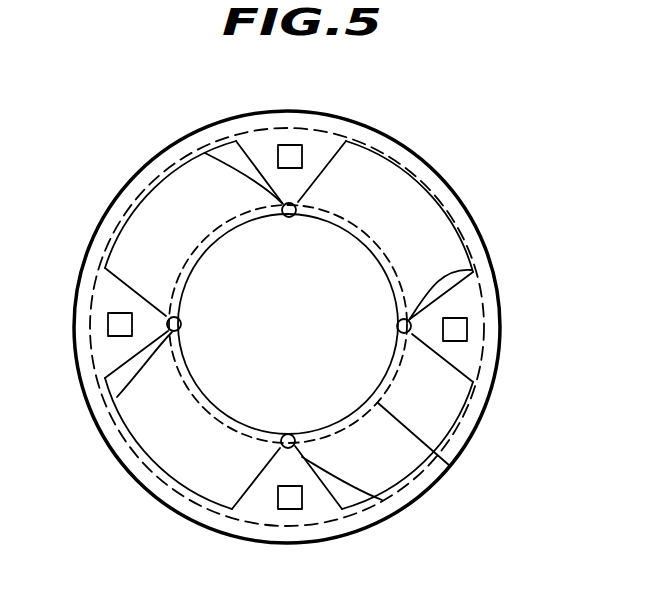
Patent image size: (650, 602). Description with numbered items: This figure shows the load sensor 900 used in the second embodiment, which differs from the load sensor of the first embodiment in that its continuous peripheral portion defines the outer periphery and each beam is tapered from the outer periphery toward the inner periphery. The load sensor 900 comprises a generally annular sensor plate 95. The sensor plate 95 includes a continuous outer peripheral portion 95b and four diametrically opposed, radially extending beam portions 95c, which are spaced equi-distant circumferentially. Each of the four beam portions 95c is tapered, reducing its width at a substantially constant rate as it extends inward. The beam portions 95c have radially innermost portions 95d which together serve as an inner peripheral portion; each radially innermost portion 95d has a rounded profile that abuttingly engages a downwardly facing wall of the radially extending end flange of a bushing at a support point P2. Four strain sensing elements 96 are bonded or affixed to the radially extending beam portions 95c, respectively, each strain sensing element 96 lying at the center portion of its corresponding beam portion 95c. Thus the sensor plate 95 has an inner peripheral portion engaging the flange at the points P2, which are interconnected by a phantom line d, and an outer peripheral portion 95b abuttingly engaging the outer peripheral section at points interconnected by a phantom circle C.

The load sensor 900 is at (469, 172).
The sensor plate 95 is at (338, 109).
The continuous outer peripheral portion 95b is at (476, 215).
The beam portions 95c is at (133, 290).
The radially innermost portions 95d is at (289, 218).
The strain sensing elements 96 is at (289, 165).
The support point P2 is at (205, 153).
The phantom circle C is at (150, 180).
The phantom line d is at (458, 468).